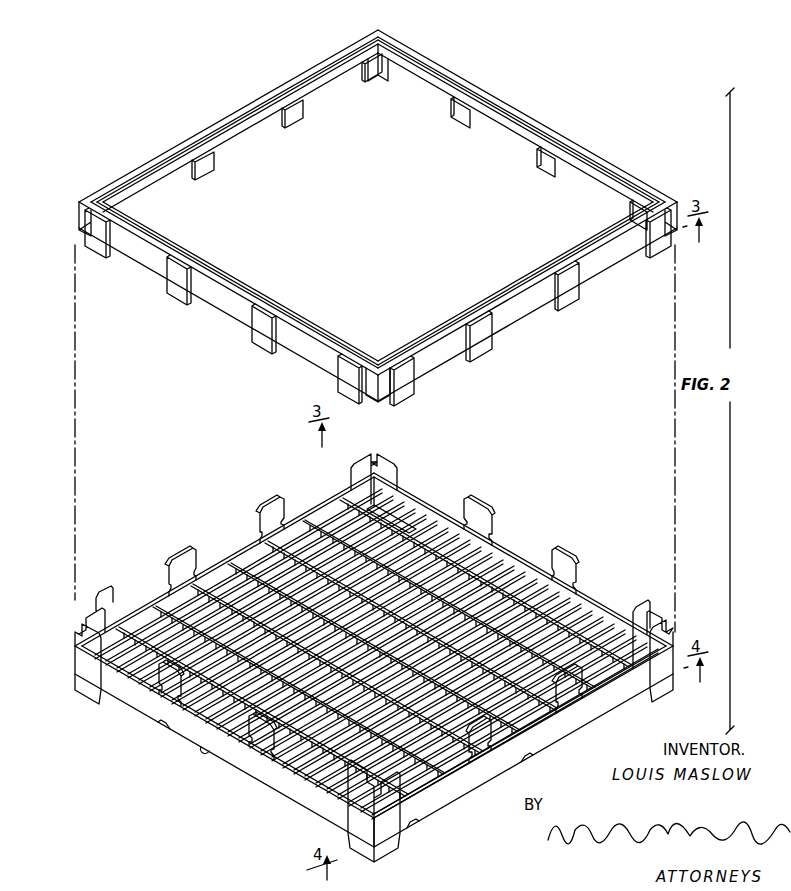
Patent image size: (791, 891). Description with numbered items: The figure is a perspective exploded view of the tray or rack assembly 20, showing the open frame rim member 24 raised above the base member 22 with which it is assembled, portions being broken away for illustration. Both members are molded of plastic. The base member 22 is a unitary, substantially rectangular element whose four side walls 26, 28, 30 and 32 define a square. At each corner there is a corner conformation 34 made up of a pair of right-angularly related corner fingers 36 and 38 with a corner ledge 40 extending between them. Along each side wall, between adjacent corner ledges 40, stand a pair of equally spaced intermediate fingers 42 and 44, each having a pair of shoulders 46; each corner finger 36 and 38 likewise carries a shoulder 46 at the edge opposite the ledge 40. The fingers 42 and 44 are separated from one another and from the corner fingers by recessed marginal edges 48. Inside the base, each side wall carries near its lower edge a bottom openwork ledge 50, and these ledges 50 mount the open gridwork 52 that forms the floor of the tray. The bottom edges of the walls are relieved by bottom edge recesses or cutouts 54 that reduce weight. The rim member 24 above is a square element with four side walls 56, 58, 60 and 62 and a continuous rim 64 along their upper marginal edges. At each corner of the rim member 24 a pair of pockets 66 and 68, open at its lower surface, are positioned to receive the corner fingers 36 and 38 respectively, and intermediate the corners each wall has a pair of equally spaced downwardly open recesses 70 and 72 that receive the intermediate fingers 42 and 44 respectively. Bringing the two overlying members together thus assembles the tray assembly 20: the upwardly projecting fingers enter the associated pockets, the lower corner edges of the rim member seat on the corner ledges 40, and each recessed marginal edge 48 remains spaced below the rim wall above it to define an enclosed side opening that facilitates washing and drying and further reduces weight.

The tray assembly 20 is at (602, 366).
The base member 22 is at (442, 509).
The rim member 24 is at (632, 182).
The side wall 26 is at (592, 620).
The side wall 28 is at (555, 754).
The side wall 30 is at (252, 780).
The side wall 32 is at (305, 631).
The corner conformation 34 is at (368, 653).
The corner finger 36 is at (640, 670).
The corner finger 38 is at (386, 653).
The corner ledge 40 is at (386, 653).
The intermediate finger 42 is at (482, 765).
The intermediate finger 44 is at (344, 653).
The shoulder 46 is at (74, 672).
The recessed marginal edge 48 is at (195, 705).
The bottom openwork ledge 50 is at (335, 535).
The open gridwork 52 is at (462, 568).
The bottom edge recess 54 is at (520, 760).
The side wall 56 is at (227, 121).
The side wall 58 is at (440, 100).
The side wall 60 is at (538, 308).
The side wall 62 is at (230, 310).
The continuous rim 64 is at (96, 200).
The corner pocket 66 is at (656, 253).
The corner pocket 68 is at (410, 381).
The intermediate recess 70 is at (485, 335).
The intermediate recess 72 is at (572, 290).